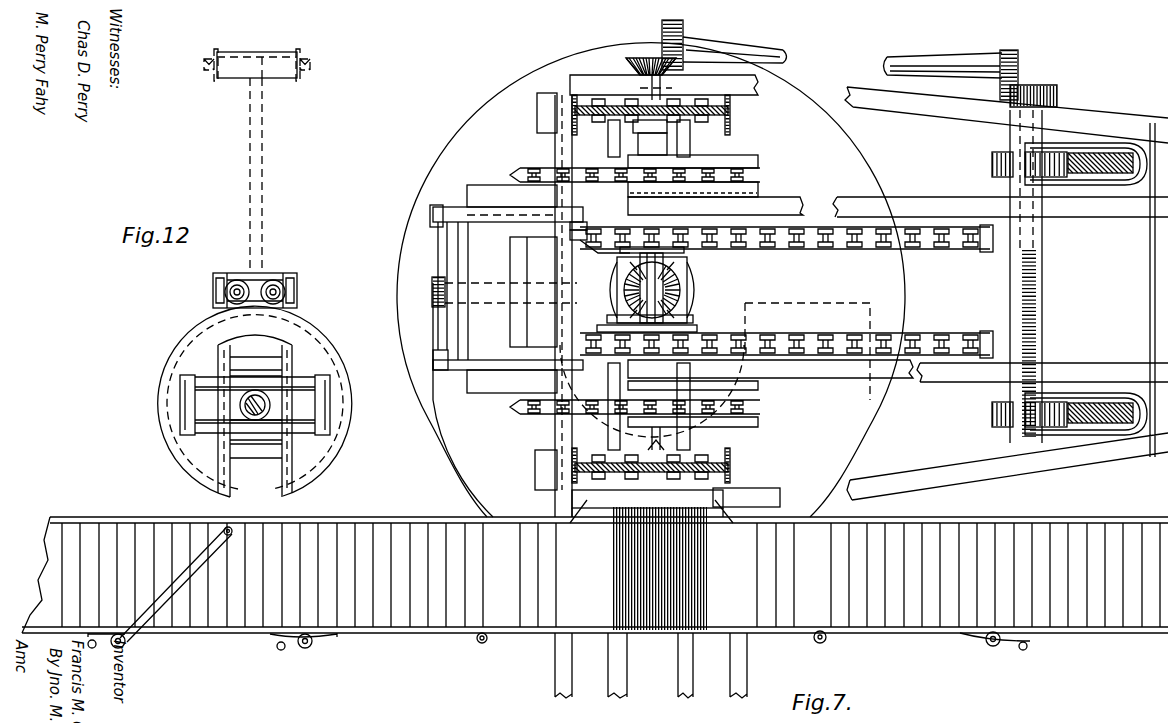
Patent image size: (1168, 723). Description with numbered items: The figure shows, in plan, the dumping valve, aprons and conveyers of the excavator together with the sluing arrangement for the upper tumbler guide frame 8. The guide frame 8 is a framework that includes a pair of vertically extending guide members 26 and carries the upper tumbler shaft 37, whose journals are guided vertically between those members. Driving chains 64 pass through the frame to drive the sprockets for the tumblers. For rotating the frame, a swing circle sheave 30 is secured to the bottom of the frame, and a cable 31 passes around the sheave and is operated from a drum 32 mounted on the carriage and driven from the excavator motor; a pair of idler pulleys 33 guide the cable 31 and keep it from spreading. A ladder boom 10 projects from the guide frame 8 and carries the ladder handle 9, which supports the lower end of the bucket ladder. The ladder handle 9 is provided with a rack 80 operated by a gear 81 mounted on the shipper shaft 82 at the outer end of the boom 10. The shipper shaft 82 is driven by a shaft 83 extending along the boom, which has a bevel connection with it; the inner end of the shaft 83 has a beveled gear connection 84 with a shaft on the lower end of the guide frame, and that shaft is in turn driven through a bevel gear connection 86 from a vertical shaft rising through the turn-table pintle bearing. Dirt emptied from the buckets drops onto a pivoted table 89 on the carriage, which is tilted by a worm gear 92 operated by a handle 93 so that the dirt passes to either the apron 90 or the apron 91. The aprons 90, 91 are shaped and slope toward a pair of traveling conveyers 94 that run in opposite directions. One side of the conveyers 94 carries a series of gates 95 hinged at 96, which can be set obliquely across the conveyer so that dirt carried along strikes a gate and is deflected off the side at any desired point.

In FIG. 12, the tumbler guide frame 8 is at (215, 425).
In FIG. 7, the ladder handle 9 is at (1125, 165).
In FIG. 7, the ladder boom 10 is at (1000, 468).
In FIG. 7, the guide members 26 is at (728, 118).
In FIG. 12, the swing circle sheave 30 is at (202, 352).
In FIG. 7, the swing circle sheave 30 is at (850, 152).
In FIG. 12, the cable 31 is at (249, 197).
In FIG. 12, the drum 32 is at (237, 78).
In FIG. 12, the idler pulleys 33 is at (283, 278).
In FIG. 7, the shaft 37 is at (652, 300).
In FIG. 7, the driving chains 64 is at (953, 331).
In FIG. 7, the rack 80 is at (1068, 427).
In FIG. 7, the gear 81 is at (993, 165).
In FIG. 7, the shipper shaft 82 is at (1040, 291).
In FIG. 7, the shaft 83 is at (943, 63).
In FIG. 7, the beveled gear connection 84 is at (662, 58).
In FIG. 7, the bevel gear connection 86 is at (680, 265).
In FIG. 7, the table 89 is at (500, 386).
In FIG. 7, the apron 90 is at (453, 442).
In FIG. 7, the apron 91 is at (847, 432).
In FIG. 7, the worm gear 92 is at (436, 284).
In FIG. 7, the handle 93 is at (437, 210).
In FIG. 7, the traveling conveyers 94 is at (895, 547).
In FIG. 7, the gates 95 is at (165, 592).
In FIG. 7, the hinges 96 is at (122, 643).